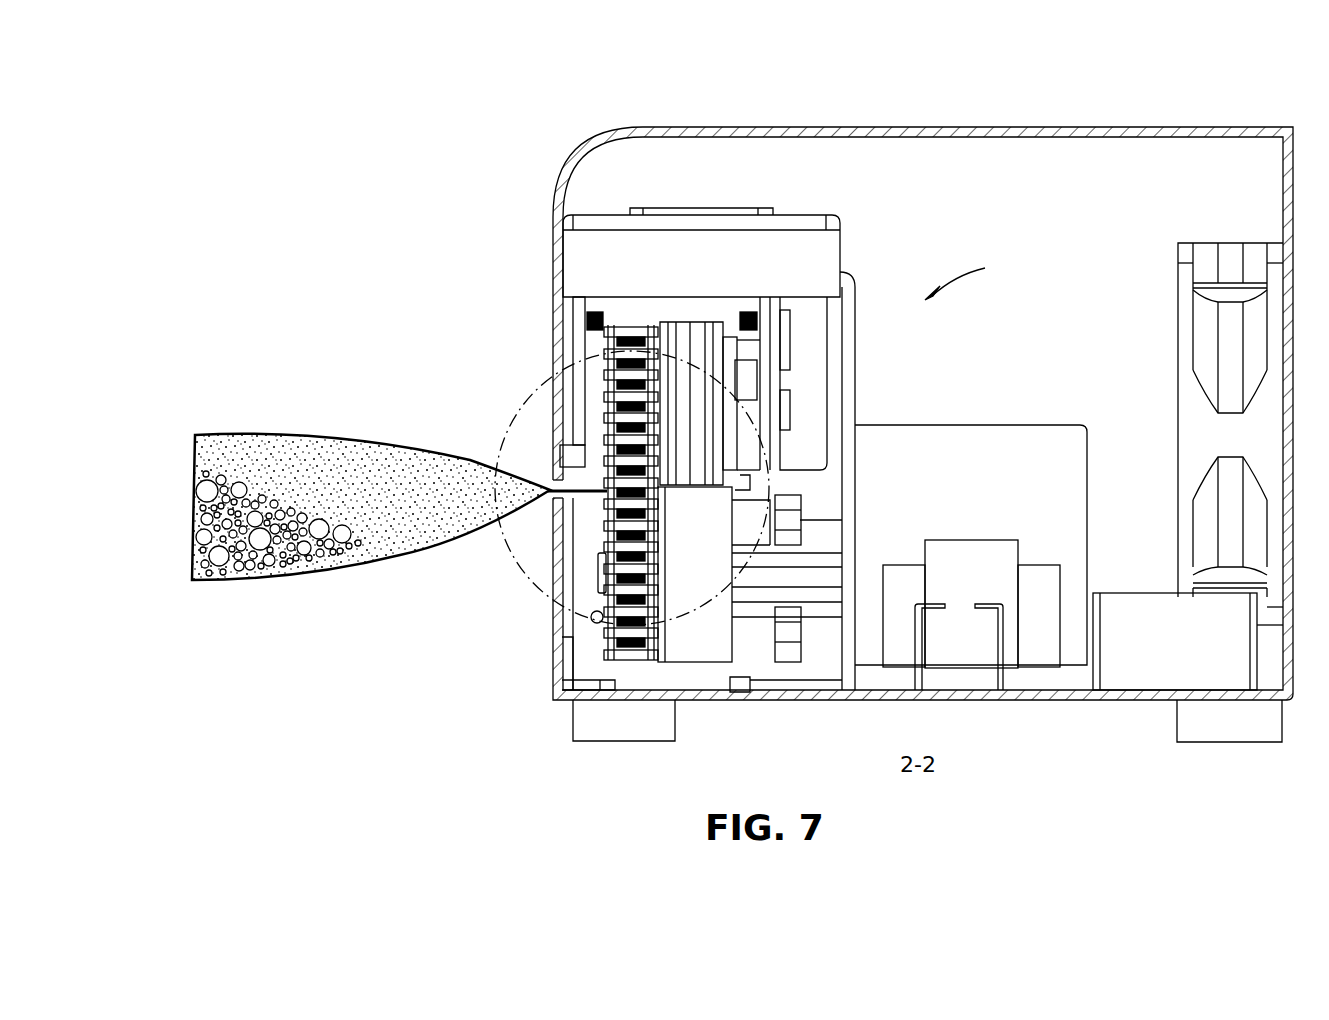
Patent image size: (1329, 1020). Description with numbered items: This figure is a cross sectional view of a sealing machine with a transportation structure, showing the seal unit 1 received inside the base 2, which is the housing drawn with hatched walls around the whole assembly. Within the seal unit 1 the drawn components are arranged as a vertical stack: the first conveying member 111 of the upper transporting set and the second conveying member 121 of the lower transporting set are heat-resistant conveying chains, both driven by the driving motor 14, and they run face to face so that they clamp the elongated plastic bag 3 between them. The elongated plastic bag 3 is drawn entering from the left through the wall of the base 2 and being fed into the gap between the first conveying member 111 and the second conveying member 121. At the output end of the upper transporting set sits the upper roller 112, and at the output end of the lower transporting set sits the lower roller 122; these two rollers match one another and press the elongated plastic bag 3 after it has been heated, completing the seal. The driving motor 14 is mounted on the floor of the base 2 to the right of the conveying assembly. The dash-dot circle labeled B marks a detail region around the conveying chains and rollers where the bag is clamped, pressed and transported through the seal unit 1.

The seal unit 1 is at (964, 284).
The base 2 is at (1170, 127).
The elongated plastic bag 3 is at (390, 440).
The driving motor 14 is at (970, 540).
The first conveying member 111 is at (600, 340).
The upper roller 112 is at (687, 322).
The second conveying member 121 is at (612, 652).
The lower roller 122 is at (697, 665).
The detail region B is at (530, 589).